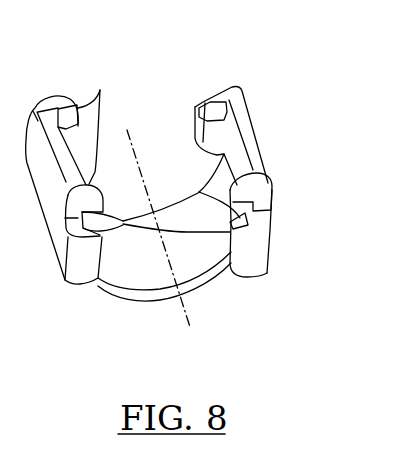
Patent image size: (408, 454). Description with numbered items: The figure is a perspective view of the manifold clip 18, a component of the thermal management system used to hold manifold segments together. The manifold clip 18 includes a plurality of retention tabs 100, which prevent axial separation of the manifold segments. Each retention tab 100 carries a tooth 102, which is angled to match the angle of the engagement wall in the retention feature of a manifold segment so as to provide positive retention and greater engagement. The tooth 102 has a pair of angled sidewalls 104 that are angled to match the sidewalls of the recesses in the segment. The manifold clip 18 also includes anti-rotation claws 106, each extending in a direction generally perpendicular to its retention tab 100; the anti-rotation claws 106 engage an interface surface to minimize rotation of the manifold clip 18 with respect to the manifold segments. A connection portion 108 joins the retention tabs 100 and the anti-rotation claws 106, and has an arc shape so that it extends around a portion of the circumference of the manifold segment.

The manifold clip 18 is at (258, 72).
The retention tab 100 is at (203, 128).
The tooth 102 is at (131, 222).
The angled sidewall 104 is at (199, 192).
The anti-rotation claw 106 is at (100, 90).
The connection portion 108 is at (140, 272).